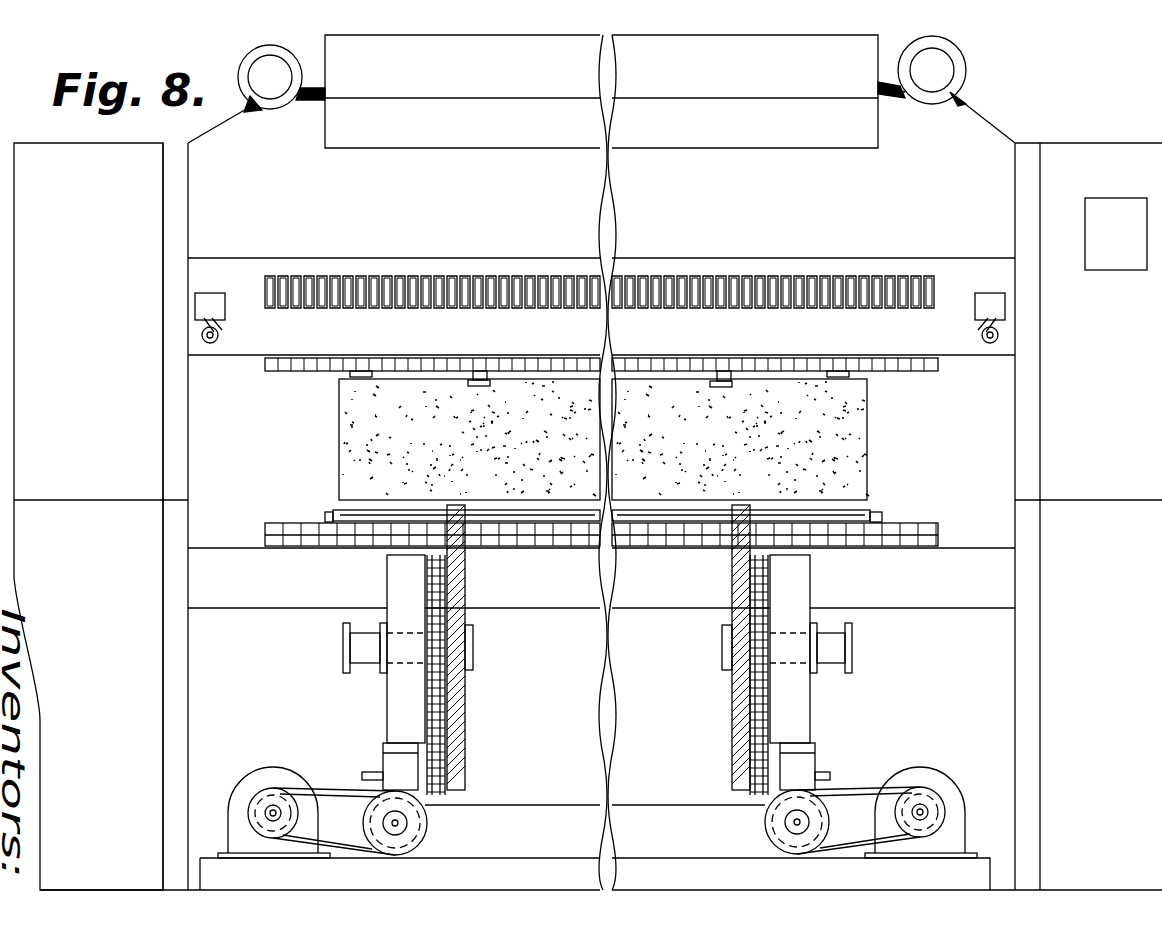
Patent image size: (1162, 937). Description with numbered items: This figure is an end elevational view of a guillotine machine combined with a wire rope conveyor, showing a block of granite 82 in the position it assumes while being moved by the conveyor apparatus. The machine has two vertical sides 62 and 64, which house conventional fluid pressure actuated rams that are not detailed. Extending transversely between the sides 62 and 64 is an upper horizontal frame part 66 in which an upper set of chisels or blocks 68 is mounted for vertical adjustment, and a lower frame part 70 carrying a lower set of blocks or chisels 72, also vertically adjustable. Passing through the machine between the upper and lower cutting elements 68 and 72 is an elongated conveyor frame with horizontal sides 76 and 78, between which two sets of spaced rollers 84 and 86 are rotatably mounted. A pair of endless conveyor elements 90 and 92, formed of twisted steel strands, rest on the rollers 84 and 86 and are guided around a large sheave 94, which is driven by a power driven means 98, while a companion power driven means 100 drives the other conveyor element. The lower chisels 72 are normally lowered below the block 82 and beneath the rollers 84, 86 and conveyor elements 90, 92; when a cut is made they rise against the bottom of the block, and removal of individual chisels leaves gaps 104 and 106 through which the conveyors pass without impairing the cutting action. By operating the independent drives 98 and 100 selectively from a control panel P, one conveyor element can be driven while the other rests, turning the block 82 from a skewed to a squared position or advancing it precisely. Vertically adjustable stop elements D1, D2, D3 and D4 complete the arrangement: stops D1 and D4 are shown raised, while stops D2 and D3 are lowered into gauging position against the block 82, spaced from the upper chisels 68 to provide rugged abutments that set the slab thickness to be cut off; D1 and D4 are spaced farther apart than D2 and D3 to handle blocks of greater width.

The vertical side 62 is at (56, 162).
The vertical side 64 is at (1093, 153).
The upper horizontal frame part 66 is at (912, 268).
The upper set of chisels or blocks 68 is at (918, 372).
The stop element D1 is at (378, 358).
The stop element D2 is at (504, 358).
The stop element D3 is at (745, 358).
The stop element D4 is at (870, 358).
The block of granite 82 is at (354, 421).
The horizontal side of conveyor frame 76 is at (327, 514).
The roller 86 is at (332, 511).
The roller 84 is at (867, 510).
The horizontal side of conveyor frame 78 is at (905, 527).
The lower set of blocks or chisels 72 is at (925, 531).
The lower frame part 70 is at (919, 596).
The gap 104 is at (467, 548).
The gap 106 is at (729, 548).
The endless conveyor element 90 is at (447, 756).
The large sheave 94 is at (456, 775).
The endless conveyor element 92 is at (738, 708).
The power driven means 98 is at (260, 776).
The power driven means 100 is at (925, 776).
The control panel P is at (1118, 255).